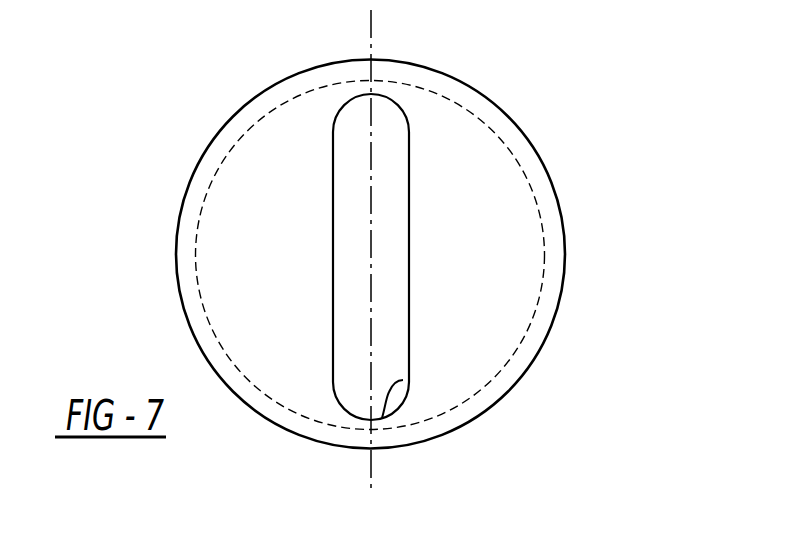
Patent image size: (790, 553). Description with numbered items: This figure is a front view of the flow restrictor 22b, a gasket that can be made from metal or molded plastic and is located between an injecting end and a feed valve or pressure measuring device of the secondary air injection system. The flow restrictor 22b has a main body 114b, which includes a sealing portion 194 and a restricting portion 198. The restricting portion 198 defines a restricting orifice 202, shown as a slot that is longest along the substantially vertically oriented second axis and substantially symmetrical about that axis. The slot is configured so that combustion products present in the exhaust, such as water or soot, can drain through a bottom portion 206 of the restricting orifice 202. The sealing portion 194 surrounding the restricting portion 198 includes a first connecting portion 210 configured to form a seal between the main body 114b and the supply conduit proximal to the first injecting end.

The flow restrictor 22b is at (195, 62).
The main body 114b is at (188, 190).
The sealing portion 194 is at (488, 108).
The restricting portion 198 is at (488, 188).
The restricting orifice 202 is at (409, 257).
The bottom portion 206 is at (403, 380).
The first connecting portion 210 is at (530, 353).